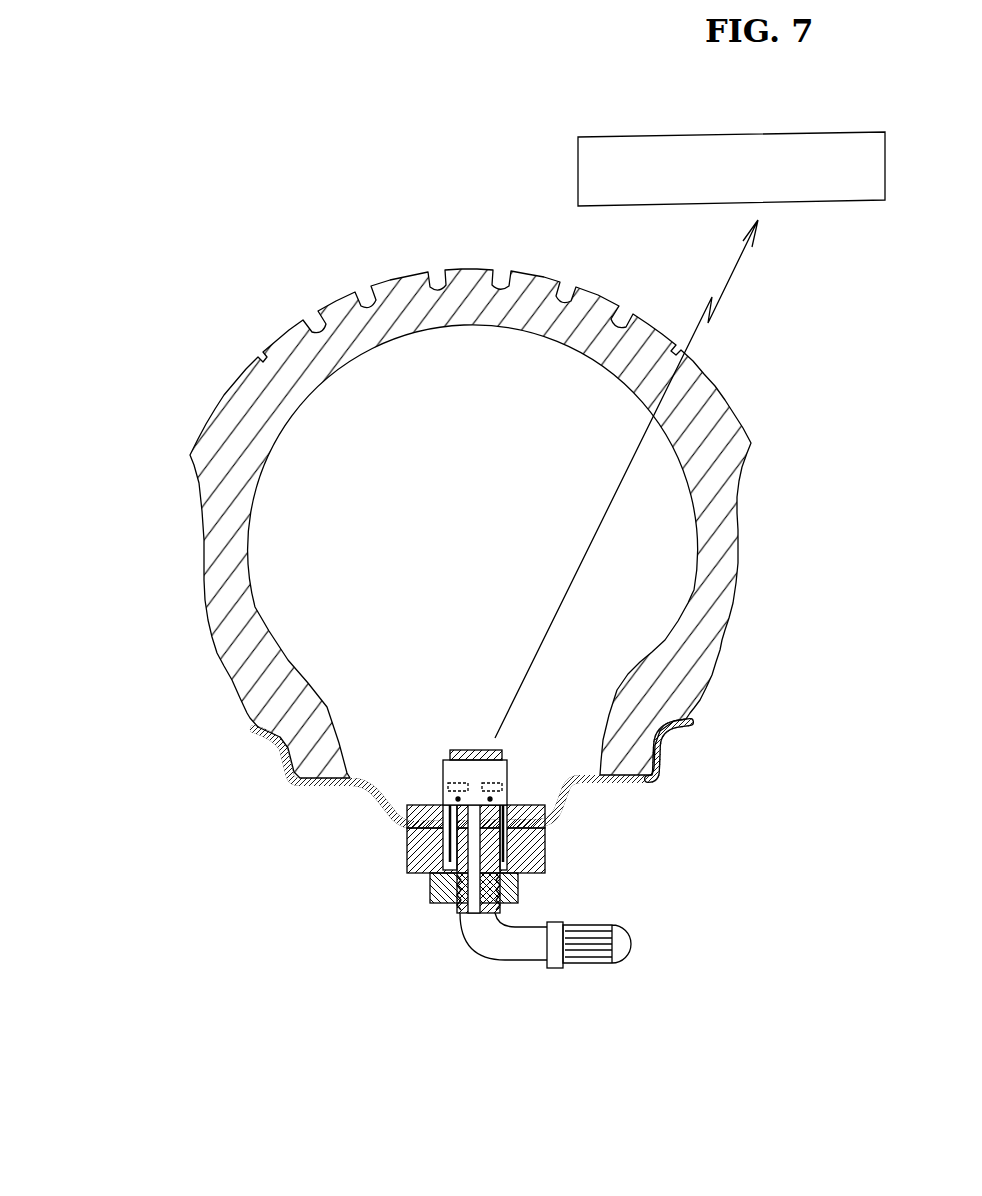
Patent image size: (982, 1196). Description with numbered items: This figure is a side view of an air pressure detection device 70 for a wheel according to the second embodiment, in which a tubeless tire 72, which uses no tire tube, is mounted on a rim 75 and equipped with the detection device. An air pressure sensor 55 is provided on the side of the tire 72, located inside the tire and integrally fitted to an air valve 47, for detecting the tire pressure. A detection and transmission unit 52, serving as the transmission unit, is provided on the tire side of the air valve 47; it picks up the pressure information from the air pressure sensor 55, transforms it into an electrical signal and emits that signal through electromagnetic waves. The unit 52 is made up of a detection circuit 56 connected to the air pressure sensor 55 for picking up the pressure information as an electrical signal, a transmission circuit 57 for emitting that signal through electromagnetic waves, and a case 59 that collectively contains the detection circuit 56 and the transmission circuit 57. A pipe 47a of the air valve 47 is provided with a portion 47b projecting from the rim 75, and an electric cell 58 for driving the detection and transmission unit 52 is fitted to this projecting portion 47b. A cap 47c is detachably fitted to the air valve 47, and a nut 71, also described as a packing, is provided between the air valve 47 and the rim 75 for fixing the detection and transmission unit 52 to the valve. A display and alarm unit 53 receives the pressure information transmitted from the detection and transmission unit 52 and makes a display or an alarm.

The air pressure detection device 70 is at (154, 232).
The tubeless tire 72 is at (346, 318).
The rim 75 is at (662, 772).
The display and alarm unit 53 is at (614, 207).
The detection and transmission unit 52 is at (414, 775).
The air pressure sensor 55 is at (467, 753).
The case 59 is at (508, 766).
The detection circuit 56 is at (442, 793).
The transmission circuit 57 is at (507, 783).
The electric cell 58 is at (547, 863).
The nut 71 is at (547, 833).
The air valve 47 is at (543, 980).
The pipe 47a is at (460, 903).
The portion projecting from the rim 47b is at (495, 945).
The cap 47c is at (628, 953).